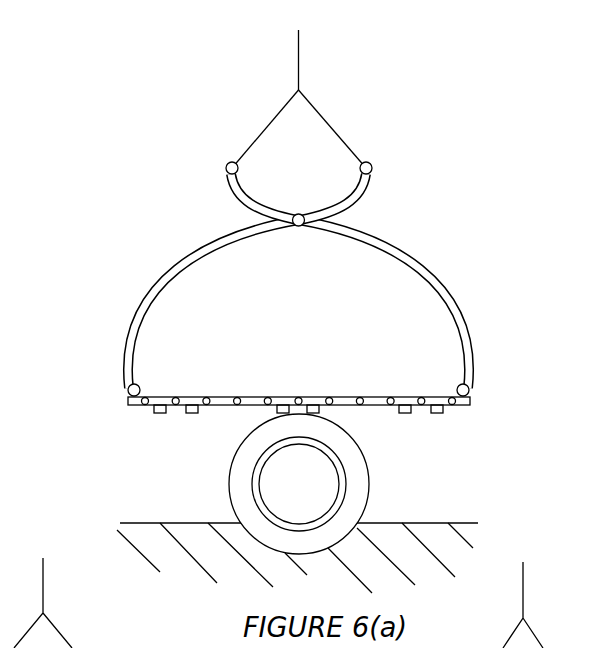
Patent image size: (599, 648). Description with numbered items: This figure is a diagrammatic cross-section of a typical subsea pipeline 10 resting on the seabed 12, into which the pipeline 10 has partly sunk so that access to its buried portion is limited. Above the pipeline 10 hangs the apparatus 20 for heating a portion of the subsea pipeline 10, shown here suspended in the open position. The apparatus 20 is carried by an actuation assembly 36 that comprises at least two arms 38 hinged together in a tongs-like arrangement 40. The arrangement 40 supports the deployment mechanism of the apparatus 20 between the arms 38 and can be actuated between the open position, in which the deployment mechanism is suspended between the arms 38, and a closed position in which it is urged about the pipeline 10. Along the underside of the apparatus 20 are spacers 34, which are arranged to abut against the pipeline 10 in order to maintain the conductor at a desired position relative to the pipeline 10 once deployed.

The subsea pipeline 10 is at (291, 497).
The seabed 12 is at (427, 522).
The apparatus 20 is at (331, 373).
The spacers 34 is at (192, 415).
The actuation assembly 36 is at (138, 226).
The arms 38 is at (192, 265).
The tongs-like arrangement 40 is at (472, 271).